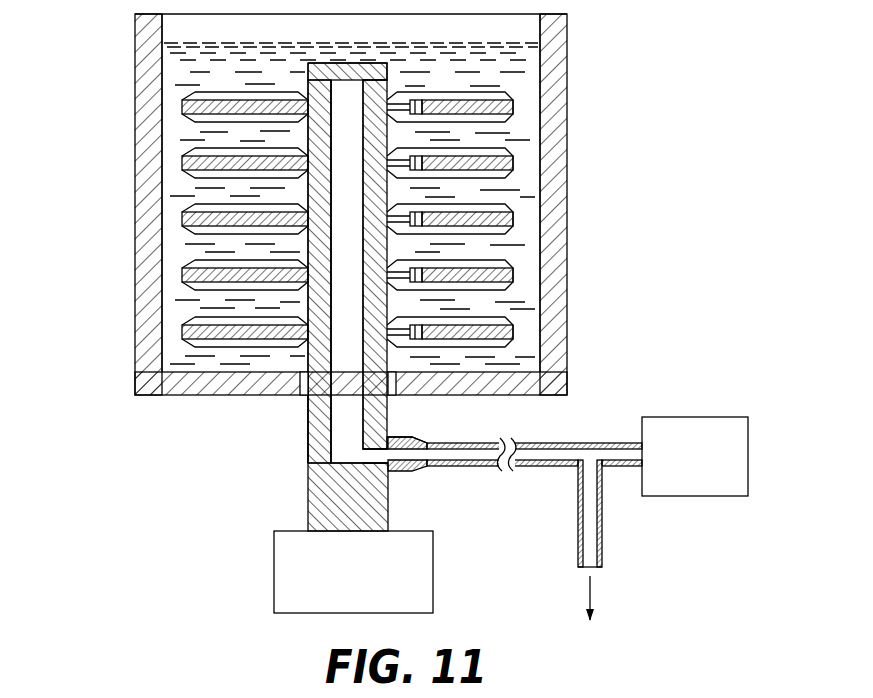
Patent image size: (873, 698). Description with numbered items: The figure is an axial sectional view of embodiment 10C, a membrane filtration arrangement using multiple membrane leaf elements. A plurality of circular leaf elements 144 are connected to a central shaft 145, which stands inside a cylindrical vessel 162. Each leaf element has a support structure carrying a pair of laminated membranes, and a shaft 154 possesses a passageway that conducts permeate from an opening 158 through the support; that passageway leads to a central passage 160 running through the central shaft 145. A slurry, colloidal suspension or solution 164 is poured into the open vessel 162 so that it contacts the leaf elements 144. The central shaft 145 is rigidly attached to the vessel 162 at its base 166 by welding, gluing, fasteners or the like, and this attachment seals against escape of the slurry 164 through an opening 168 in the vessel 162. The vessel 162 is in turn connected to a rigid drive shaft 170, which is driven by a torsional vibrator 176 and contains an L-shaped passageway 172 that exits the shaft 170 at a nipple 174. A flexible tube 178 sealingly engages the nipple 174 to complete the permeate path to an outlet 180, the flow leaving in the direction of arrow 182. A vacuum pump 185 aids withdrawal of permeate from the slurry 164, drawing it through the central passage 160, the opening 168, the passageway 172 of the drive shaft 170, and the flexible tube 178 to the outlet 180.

The third embodiment 10C is at (583, 135).
The circular leaf elements 144 is at (525, 98).
The central shaft 145 is at (310, 374).
The shaft 154 is at (385, 212).
The opening 158 is at (410, 281).
The central passage 160 is at (343, 90).
The cylindrical vessel 162 is at (143, 252).
The slurry 164 is at (197, 48).
The base 166 is at (320, 382).
The opening 168 is at (332, 400).
The rigid drive shaft 170 is at (383, 518).
The L-shaped passageway 172 is at (345, 452).
The nipple 174 is at (398, 470).
The torsional vibrator 176 is at (279, 579).
The flexible tube 178 is at (533, 470).
The outlet 180 is at (604, 549).
The directional arrow 182 is at (594, 590).
The vacuum pump 185 is at (710, 422).